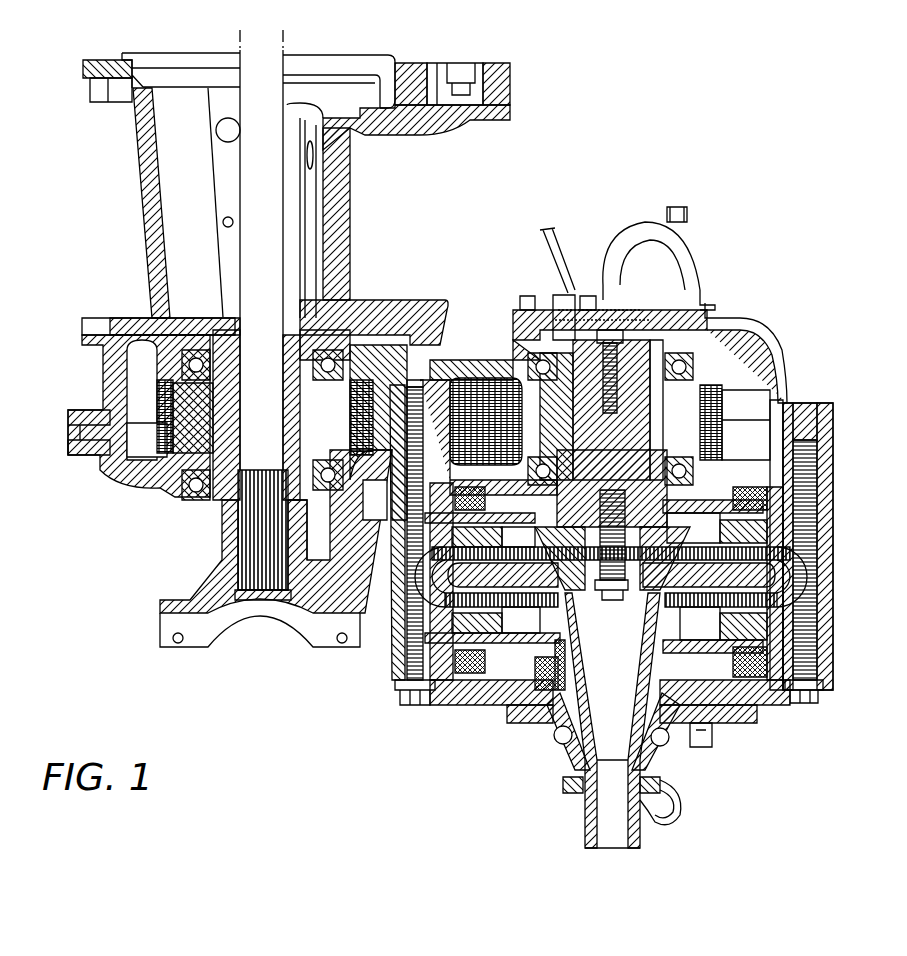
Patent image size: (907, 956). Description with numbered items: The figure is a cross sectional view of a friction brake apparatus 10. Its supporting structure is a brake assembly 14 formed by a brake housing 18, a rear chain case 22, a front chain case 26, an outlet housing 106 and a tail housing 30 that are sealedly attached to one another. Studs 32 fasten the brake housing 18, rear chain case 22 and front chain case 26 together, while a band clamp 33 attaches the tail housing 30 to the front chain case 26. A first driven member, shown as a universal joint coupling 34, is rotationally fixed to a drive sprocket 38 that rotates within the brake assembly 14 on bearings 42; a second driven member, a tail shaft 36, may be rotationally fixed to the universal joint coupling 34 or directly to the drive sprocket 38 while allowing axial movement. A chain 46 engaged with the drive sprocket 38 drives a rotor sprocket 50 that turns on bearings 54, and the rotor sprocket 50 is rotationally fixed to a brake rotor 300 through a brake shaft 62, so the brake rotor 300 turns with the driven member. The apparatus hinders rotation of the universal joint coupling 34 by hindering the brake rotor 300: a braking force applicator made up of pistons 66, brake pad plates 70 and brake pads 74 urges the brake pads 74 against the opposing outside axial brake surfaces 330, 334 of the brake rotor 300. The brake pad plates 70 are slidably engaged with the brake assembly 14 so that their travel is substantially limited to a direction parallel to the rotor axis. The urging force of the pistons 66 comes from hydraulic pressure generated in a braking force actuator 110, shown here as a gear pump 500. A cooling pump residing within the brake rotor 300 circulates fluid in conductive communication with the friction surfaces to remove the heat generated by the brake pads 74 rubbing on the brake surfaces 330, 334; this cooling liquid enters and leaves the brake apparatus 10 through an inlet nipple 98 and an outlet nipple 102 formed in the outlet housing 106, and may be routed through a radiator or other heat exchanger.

The friction brake apparatus 10 is at (793, 174).
The brake assembly 14 is at (798, 397).
The brake housing 18 is at (387, 679).
The rear chain case 22 is at (70, 440).
The front chain case 26 is at (70, 416).
The tail housing 30 is at (134, 190).
The studs 32 is at (418, 705).
The band clamp 33 is at (92, 328).
The universal joint coupling 34 is at (212, 575).
The tail shaft 36 is at (283, 62).
The drive sprocket 38 is at (165, 410).
The bearings 42 is at (178, 348).
The chain 46 is at (505, 382).
The rotor sprocket 50 is at (725, 395).
The bearings 54 is at (530, 397).
The brake shaft 62 is at (640, 392).
The pistons 66 is at (787, 485).
The brake pad plates 70 is at (812, 688).
The brake pads 74 is at (755, 615).
The inlet nipple 98 is at (587, 827).
The outlet nipple 102 is at (675, 787).
The outlet housing 106 is at (547, 742).
The braking force actuator 110 is at (730, 298).
The brake rotor 300 is at (782, 565).
The brake surface 330 is at (755, 543).
The brake surface 334 is at (730, 633).
The gear pump 500 is at (598, 281).